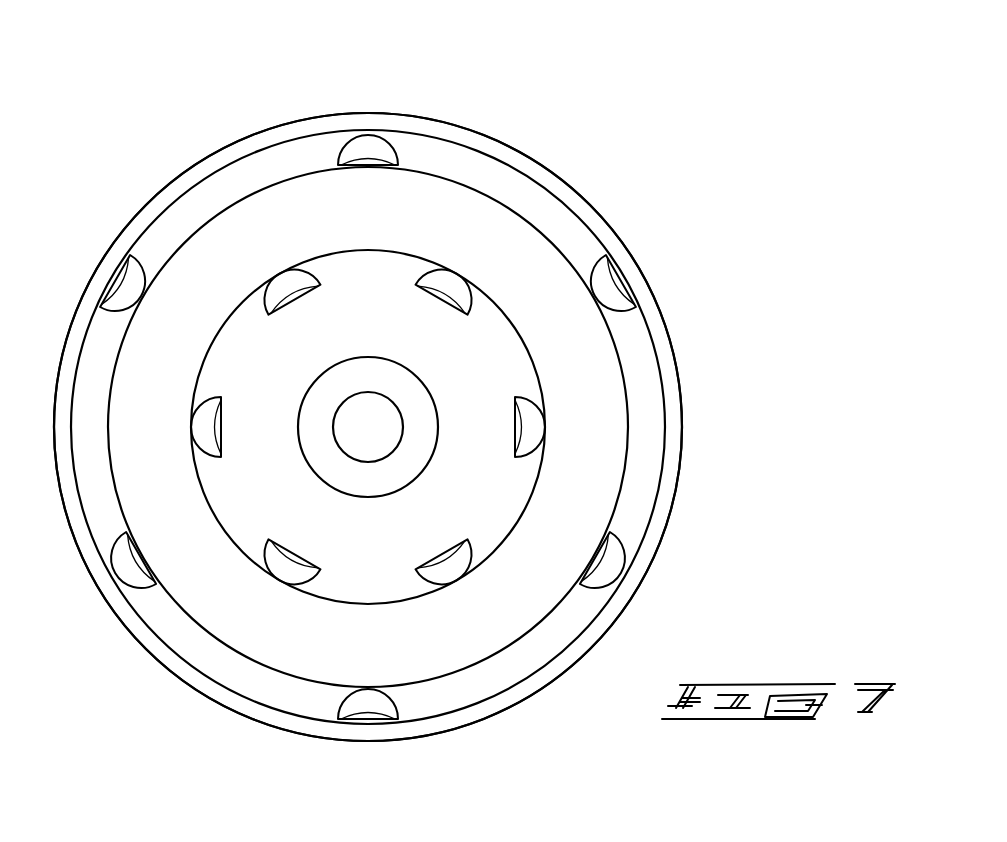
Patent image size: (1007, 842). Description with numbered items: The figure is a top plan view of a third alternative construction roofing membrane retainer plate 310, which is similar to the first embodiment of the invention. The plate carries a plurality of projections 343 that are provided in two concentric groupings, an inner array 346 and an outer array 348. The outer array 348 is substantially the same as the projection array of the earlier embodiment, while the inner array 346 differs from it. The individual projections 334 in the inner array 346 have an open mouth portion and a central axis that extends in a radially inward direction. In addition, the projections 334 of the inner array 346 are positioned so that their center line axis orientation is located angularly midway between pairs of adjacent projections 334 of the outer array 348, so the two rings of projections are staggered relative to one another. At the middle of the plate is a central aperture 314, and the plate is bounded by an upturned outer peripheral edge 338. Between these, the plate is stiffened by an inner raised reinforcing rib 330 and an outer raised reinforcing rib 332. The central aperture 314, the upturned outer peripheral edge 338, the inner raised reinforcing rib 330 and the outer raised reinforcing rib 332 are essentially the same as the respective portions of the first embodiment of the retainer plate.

The roofing membrane retainer plate 310 is at (116, 160).
The central aperture 314 is at (390, 400).
The inner raised reinforcing rib 330 is at (302, 383).
The outer raised reinforcing rib 332 is at (220, 303).
The projections 334 is at (613, 560).
The upturned outer peripheral edge 338 is at (163, 650).
The projections 343 is at (368, 143).
The inner array 346 is at (463, 258).
The outer array 348 is at (636, 253).